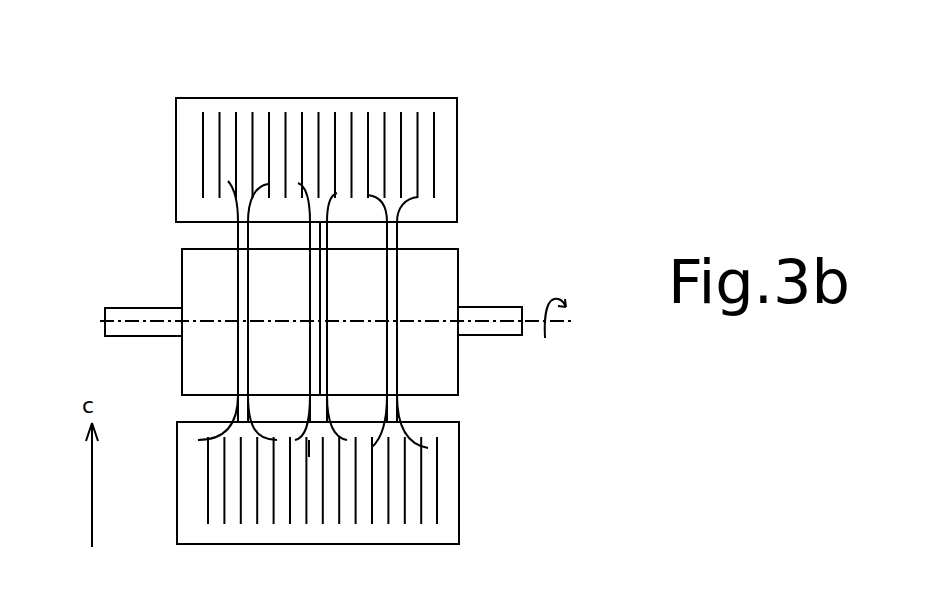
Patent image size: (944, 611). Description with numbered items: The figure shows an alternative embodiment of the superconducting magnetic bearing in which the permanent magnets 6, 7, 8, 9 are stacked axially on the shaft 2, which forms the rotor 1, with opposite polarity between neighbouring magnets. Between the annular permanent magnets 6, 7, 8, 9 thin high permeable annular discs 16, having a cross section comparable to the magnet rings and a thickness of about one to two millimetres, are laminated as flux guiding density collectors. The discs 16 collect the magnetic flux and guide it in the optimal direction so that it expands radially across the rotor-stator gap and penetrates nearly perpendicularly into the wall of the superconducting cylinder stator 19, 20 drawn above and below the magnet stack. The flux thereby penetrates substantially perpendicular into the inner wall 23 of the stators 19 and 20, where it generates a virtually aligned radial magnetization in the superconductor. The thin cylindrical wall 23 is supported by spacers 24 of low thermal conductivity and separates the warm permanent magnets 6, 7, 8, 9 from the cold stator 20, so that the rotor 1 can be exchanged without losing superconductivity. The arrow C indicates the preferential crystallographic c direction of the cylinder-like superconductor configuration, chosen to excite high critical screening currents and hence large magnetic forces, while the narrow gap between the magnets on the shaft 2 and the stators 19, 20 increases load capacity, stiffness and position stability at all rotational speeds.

The rotor 1 is at (479, 258).
The shaft 2 is at (553, 340).
The permanent magnet 6 is at (198, 283).
The permanent magnet 7 is at (290, 268).
The permanent magnet 8 is at (350, 378).
The permanent magnet 9 is at (440, 367).
The high permeable annular disc 16 is at (397, 270).
The superconducting magnet stator 19 is at (296, 72).
The superconducting magnet stator 20 is at (355, 280).
The cylindrical wall 23 is at (199, 419).
The spacer 24 is at (438, 283).